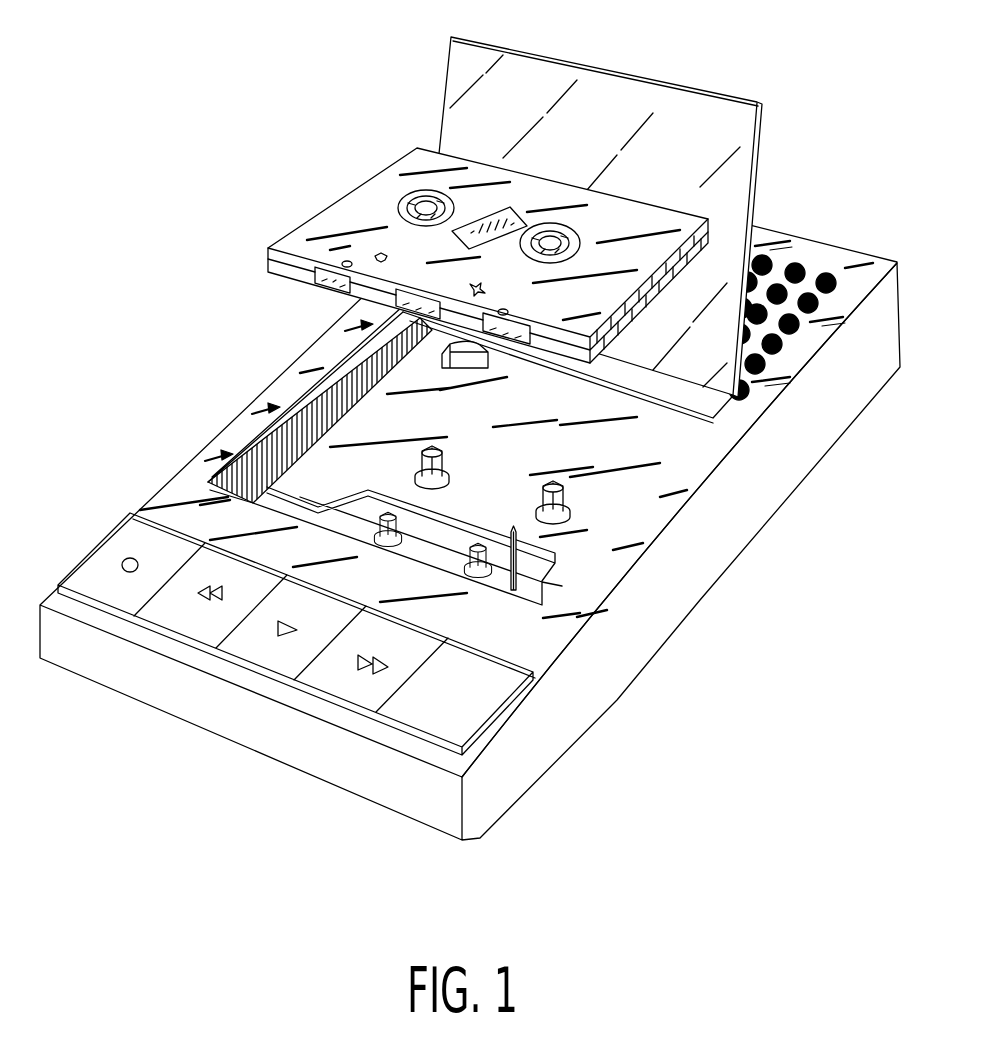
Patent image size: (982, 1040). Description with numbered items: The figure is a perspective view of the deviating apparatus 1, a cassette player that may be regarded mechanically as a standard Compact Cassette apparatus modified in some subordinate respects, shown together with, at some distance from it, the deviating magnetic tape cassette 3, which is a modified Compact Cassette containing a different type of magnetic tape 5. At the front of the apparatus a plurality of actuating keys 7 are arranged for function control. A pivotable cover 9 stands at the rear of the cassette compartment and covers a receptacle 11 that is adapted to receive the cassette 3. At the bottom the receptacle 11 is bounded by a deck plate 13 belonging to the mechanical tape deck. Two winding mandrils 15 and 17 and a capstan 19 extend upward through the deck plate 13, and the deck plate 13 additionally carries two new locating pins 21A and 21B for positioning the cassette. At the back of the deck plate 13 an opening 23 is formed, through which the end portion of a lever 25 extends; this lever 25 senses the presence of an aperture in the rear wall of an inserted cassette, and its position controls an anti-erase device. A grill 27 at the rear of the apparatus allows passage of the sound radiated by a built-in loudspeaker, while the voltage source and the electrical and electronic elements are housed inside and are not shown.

The deviating apparatus 1 is at (617, 670).
The deviating magnetic tape cassette 3 is at (488, 246).
The magnetic tape 5 is at (322, 294).
The actuating keys 7 is at (243, 640).
The pivotable cover 9 is at (646, 110).
The receptacle 11 is at (617, 510).
The deck plate 13 is at (670, 433).
The winding mandril 15 is at (452, 459).
The winding mandril 17 is at (540, 500).
The capstan 19 is at (580, 567).
The locating pin 21A is at (400, 518).
The locating pin 21B is at (486, 548).
The opening 23 is at (482, 360).
The lever 25 is at (373, 346).
The grill 27 is at (813, 262).